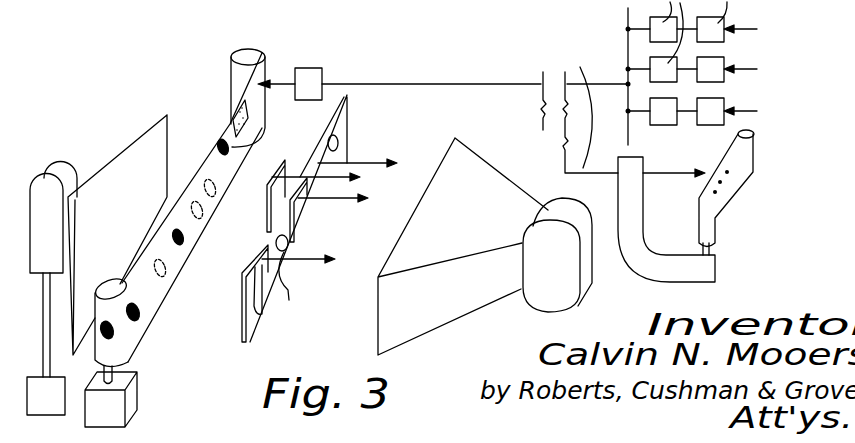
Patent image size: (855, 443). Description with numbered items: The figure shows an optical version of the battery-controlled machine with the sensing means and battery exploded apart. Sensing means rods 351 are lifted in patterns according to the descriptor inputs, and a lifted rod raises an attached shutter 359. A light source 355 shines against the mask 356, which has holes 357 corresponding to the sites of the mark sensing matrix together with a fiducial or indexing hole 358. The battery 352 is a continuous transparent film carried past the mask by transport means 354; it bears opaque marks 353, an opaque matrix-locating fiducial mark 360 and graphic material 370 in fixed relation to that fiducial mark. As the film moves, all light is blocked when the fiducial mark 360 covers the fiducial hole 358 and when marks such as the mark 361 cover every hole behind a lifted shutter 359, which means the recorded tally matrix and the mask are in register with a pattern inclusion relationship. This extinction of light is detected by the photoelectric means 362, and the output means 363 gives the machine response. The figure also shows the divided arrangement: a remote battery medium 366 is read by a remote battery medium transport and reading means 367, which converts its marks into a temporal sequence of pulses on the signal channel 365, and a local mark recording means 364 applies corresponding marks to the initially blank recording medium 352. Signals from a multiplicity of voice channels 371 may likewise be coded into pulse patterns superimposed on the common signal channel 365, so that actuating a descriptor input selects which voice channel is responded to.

The sensing means rods 351 is at (343, 197).
The battery 352 is at (265, 70).
The marks 353 is at (140, 313).
The transport means 354 is at (112, 417).
The light source 355 is at (510, 180).
The mask 356 is at (350, 108).
The holes 357 is at (250, 314).
The fiducial or indexing hole 358 is at (340, 140).
The shutter 359 is at (272, 192).
The matrix-locating fiducial mark 360 is at (232, 147).
The mark 361 is at (178, 245).
The photoelectric means 362 is at (105, 165).
The output means 363 is at (47, 397).
The local mark recording means 364 is at (298, 99).
The signal channel 365 is at (525, 84).
The remote battery medium 366 is at (722, 187).
The remote battery medium transport and reading means 367 is at (632, 265).
The graphic material 370 is at (233, 112).
The voice channels 371 is at (735, 68).